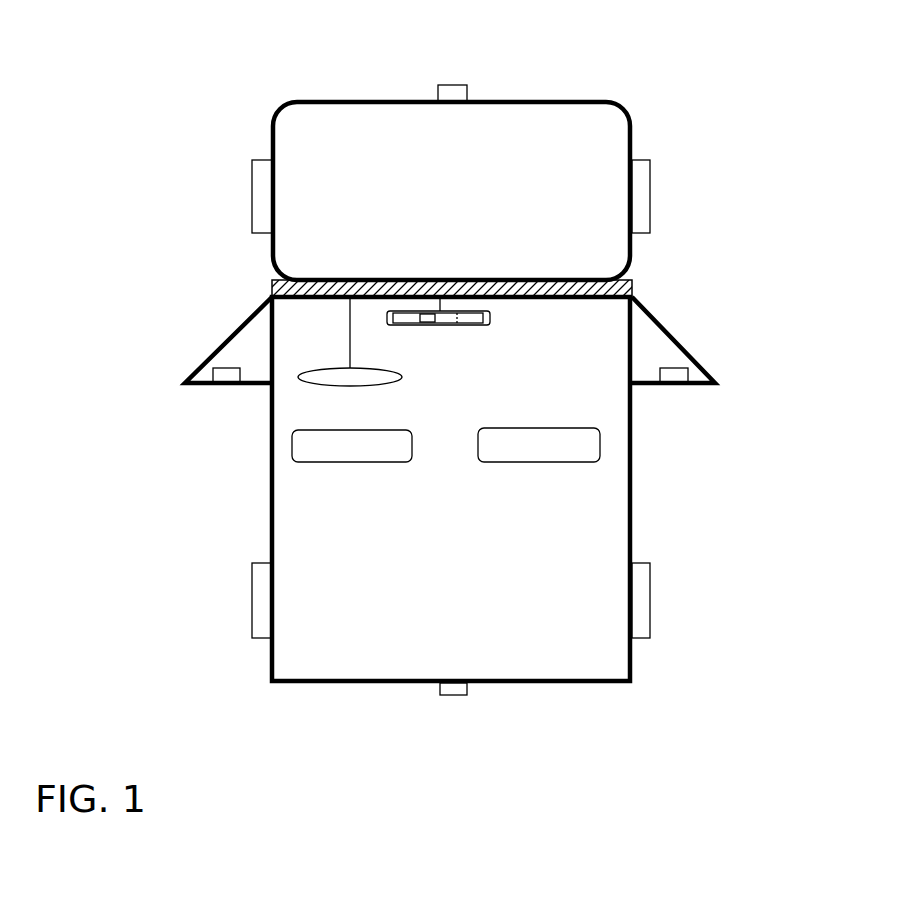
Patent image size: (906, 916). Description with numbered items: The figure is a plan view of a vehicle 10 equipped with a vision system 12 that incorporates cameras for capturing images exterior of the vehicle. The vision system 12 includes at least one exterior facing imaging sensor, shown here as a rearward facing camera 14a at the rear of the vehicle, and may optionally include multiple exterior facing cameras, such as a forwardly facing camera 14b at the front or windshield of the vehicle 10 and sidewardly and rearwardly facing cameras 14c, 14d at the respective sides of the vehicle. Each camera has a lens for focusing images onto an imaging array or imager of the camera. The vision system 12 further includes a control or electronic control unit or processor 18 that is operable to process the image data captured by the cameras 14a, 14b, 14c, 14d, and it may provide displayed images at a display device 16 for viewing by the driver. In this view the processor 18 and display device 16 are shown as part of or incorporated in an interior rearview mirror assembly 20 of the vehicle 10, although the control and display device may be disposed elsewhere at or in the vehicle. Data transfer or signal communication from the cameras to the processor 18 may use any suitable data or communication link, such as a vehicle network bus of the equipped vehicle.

The vehicle 10 is at (192, 115).
The vision system 12 is at (405, 712).
The rearward facing camera 14a is at (457, 697).
The forwardly facing camera 14b is at (453, 83).
The sidewardly/rearwardly facing camera 14c is at (188, 385).
The sidewardly/rearwardly facing camera 14d is at (695, 387).
The display device 16 is at (410, 320).
The electronic control unit 18 is at (450, 323).
The interior rearview mirror assembly 20 is at (492, 317).